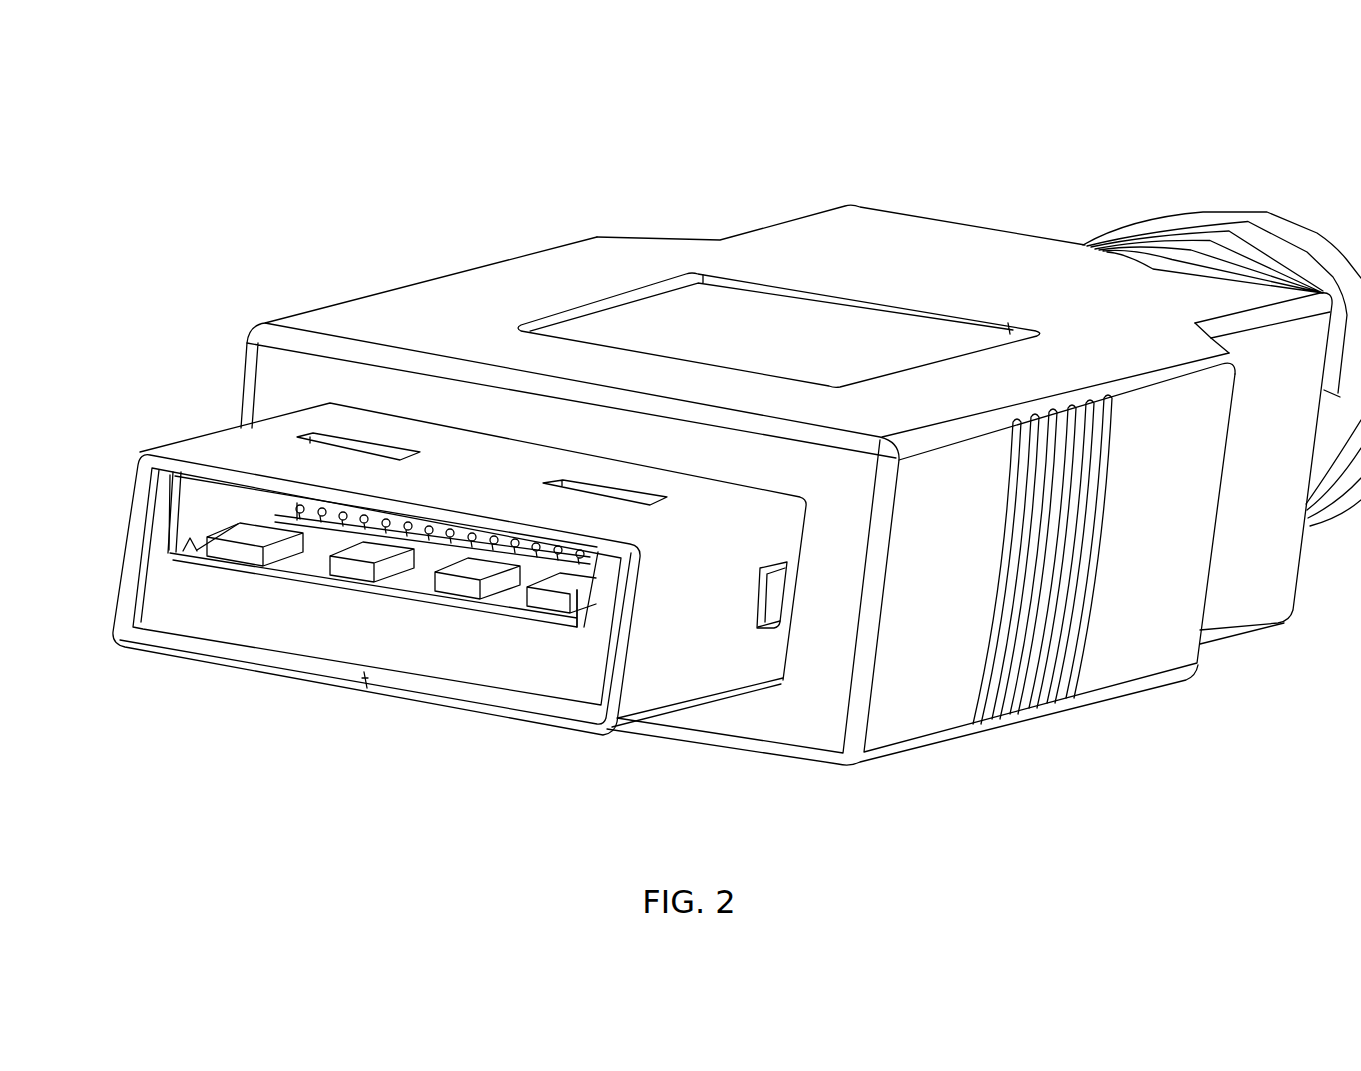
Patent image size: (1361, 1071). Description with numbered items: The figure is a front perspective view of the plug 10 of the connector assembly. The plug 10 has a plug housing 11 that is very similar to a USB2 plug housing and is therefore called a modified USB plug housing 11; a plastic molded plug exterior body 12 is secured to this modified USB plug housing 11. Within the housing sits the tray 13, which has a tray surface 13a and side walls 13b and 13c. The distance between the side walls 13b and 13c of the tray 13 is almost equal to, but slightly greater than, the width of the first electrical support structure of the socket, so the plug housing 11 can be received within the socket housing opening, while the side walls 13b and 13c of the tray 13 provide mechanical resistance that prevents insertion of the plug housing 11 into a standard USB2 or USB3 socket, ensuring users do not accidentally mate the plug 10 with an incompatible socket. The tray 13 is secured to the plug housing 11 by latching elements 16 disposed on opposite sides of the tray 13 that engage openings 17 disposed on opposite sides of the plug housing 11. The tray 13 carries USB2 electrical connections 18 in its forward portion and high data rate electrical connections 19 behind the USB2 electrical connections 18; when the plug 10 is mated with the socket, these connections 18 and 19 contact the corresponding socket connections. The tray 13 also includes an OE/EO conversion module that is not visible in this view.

The plug 10 is at (871, 132).
The modified USB plug housing 11 is at (233, 447).
The plug exterior body 12 is at (940, 640).
The tray 13 is at (283, 607).
The tray surface 13a is at (187, 547).
The side wall 13b is at (195, 525).
The side wall 13c is at (572, 587).
The latching elements 16 is at (787, 562).
The openings 17 is at (767, 630).
The USB2 electrical connections 18 is at (540, 603).
The high data rate electrical connections 19 is at (430, 520).